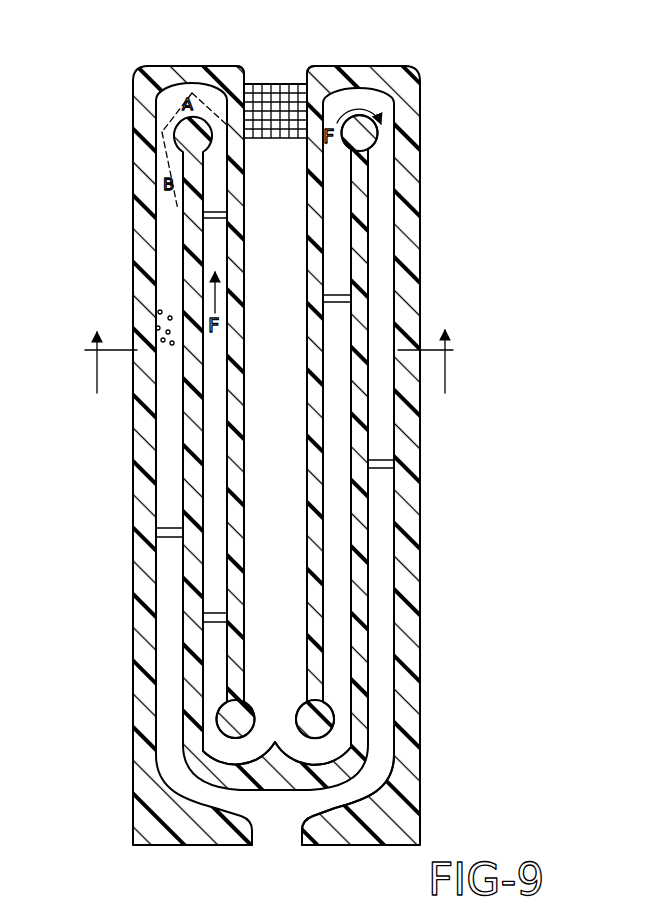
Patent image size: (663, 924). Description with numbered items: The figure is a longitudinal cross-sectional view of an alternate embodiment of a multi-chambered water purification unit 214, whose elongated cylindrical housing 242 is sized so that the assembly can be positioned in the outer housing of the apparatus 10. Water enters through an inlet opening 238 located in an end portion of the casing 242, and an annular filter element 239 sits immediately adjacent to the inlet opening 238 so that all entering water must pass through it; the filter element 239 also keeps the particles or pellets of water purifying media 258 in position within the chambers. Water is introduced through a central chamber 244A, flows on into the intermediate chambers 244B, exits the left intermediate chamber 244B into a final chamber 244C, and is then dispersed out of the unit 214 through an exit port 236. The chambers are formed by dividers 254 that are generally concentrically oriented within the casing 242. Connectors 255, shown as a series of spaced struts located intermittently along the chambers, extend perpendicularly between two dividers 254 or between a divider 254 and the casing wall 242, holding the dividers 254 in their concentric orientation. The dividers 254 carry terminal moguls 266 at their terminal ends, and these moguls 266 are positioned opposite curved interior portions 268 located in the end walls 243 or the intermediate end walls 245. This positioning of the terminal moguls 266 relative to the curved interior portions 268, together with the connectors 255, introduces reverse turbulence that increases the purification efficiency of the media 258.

The apparatus 10 is at (273, 344).
The multi-chambered water purification unit 214 is at (513, 227).
The exit port 236 is at (283, 833).
The inlet opening 238 is at (272, 77).
The annular filter element 239 is at (236, 74).
The housing 242 is at (410, 643).
The end wall 243 is at (350, 63).
The central chamber 244A is at (302, 405).
The intermediate chamber 244B is at (213, 468).
The final chamber 244C is at (160, 432).
The intermediate end wall 245 is at (307, 817).
The divider 254 is at (313, 520).
The connector 255 is at (337, 297).
The water purifying media 258 is at (160, 302).
The terminal mogul 266 is at (378, 139).
The curved interior portion 268 is at (362, 91).